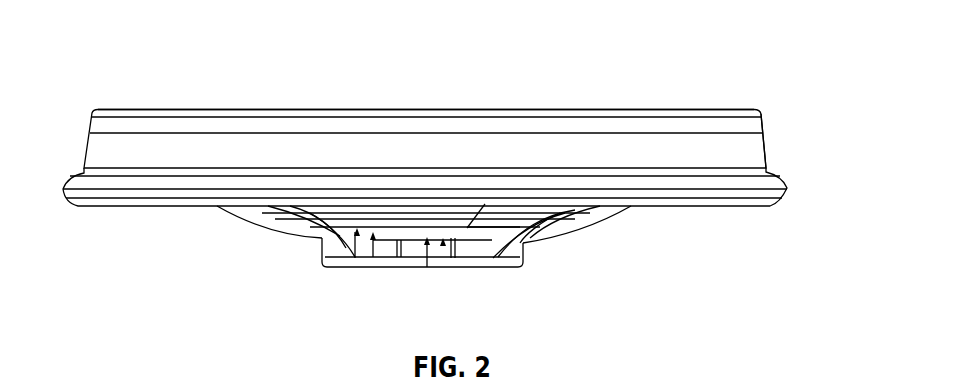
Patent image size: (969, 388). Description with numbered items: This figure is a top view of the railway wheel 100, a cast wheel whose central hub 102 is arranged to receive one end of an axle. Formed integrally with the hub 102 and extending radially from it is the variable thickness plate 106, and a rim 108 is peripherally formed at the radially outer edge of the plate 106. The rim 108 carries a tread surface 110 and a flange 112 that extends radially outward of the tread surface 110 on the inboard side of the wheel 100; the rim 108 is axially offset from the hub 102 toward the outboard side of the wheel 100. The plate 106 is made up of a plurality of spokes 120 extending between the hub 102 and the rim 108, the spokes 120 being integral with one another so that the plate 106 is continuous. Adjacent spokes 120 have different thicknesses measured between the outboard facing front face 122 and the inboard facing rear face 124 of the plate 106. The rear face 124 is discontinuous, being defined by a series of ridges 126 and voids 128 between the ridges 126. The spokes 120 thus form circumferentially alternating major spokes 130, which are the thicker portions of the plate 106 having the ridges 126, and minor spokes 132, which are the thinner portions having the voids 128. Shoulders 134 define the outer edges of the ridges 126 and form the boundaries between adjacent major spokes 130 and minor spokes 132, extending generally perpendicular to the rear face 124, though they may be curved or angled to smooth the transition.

The railway wheel 100 is at (101, 46).
The hub 102 is at (505, 269).
The plate 106 is at (580, 230).
The rim 108 is at (767, 157).
The tread surface 110 is at (742, 152).
The flange 112 is at (769, 201).
The spokes 120 is at (375, 250).
The front face 122 is at (473, 110).
The rear face 124 is at (438, 242).
The ridges 126 is at (413, 237).
The voids 128 is at (357, 253).
The major spokes 130 is at (425, 200).
The minor spokes 132 is at (343, 200).
The shoulders 134 is at (515, 232).